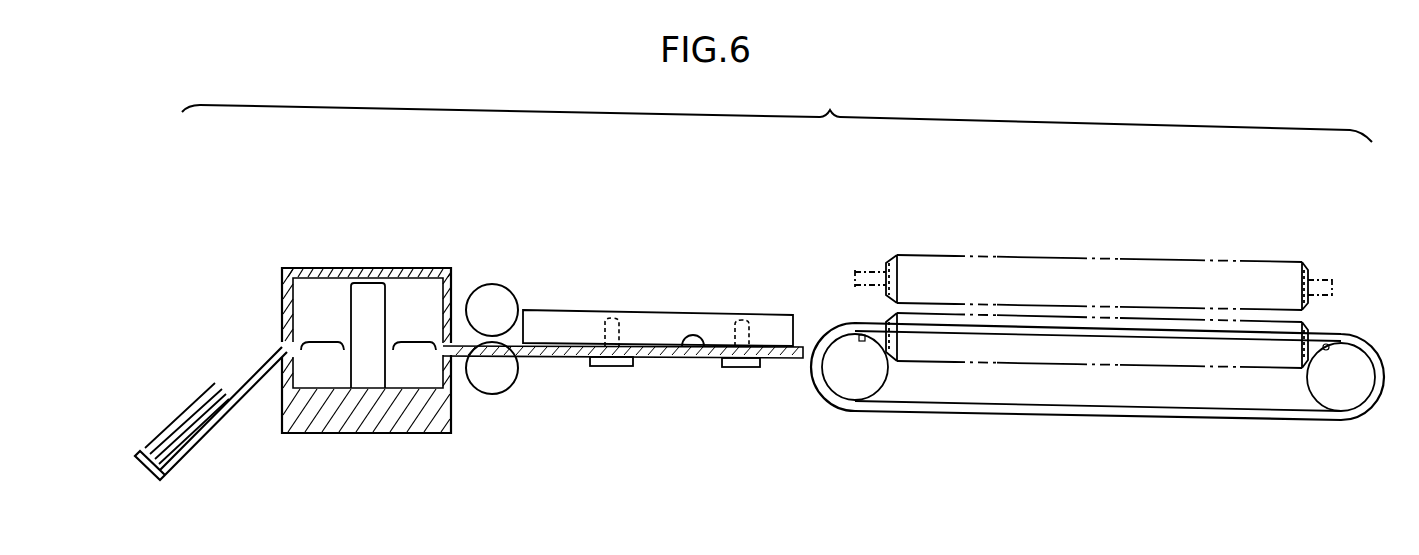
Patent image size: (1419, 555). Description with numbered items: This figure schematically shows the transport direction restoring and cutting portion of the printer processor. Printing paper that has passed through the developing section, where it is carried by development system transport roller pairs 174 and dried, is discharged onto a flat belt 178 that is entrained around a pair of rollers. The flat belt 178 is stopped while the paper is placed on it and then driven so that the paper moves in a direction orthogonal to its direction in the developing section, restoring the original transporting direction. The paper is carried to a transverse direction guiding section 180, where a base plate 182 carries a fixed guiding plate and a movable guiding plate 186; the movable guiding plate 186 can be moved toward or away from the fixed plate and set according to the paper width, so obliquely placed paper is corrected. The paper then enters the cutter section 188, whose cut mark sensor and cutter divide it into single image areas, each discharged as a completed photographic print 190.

The development system transport roller pairs 174 is at (1262, 255).
The flat belt 178 is at (1339, 333).
The transverse direction guiding section 180 is at (727, 255).
The base plate 182 is at (685, 358).
The movable guiding plate 186 is at (651, 323).
The cutter section 188 is at (427, 440).
The completed photographic print 190 is at (196, 403).